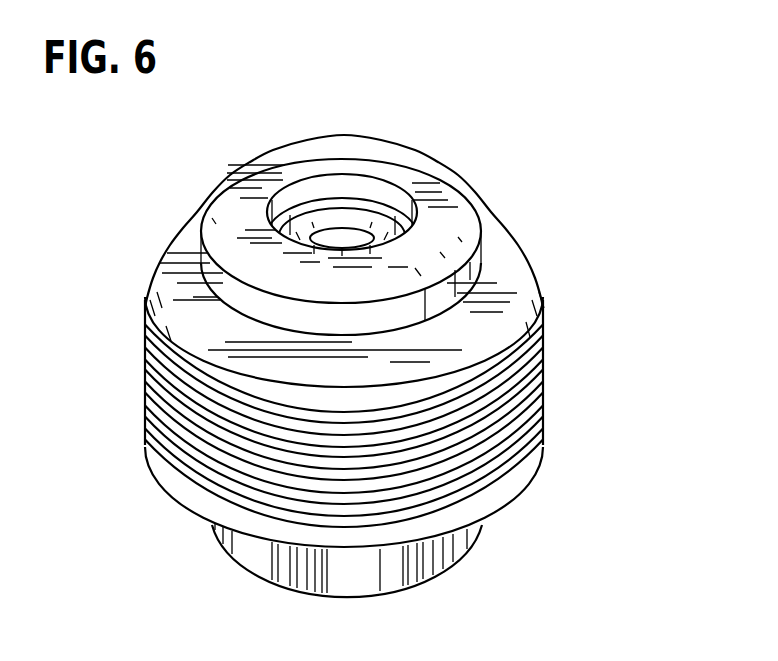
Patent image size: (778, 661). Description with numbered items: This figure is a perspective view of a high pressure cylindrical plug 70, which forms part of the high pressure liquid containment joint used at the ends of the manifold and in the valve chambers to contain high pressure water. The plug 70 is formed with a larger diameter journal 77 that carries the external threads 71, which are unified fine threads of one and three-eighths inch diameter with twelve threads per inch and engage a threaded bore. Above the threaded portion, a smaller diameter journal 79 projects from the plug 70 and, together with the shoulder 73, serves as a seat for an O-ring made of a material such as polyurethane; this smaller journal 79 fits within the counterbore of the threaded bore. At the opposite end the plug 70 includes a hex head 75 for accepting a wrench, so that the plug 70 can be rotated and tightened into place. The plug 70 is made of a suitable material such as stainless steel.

The plug 70 is at (365, 341).
The external threads 71 is at (540, 352).
The shoulder 73 is at (492, 243).
The hex head 75 is at (312, 585).
The larger diameter journal 77 is at (545, 428).
The smaller diameter journal 79 is at (203, 240).